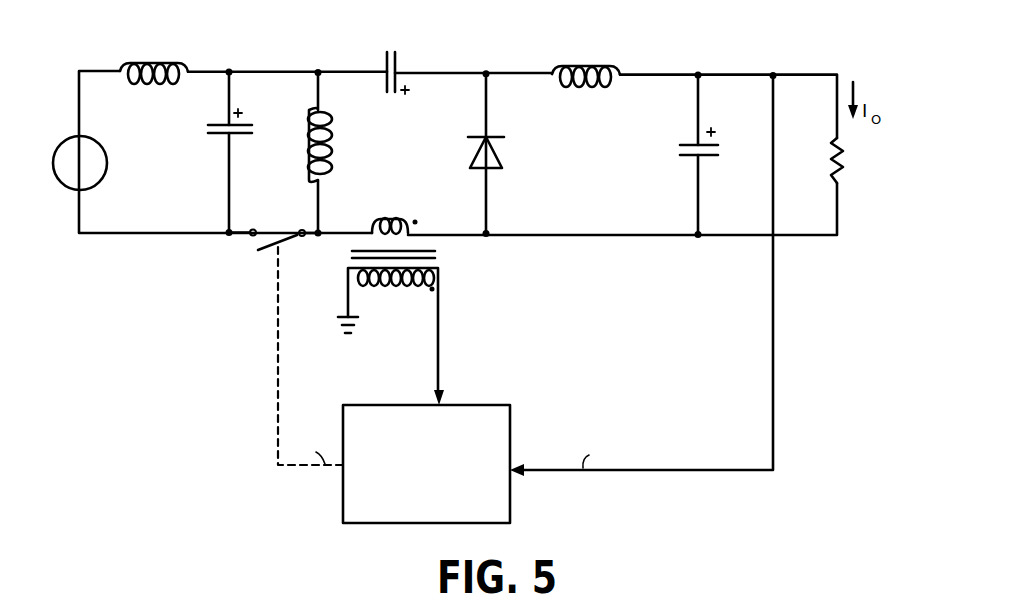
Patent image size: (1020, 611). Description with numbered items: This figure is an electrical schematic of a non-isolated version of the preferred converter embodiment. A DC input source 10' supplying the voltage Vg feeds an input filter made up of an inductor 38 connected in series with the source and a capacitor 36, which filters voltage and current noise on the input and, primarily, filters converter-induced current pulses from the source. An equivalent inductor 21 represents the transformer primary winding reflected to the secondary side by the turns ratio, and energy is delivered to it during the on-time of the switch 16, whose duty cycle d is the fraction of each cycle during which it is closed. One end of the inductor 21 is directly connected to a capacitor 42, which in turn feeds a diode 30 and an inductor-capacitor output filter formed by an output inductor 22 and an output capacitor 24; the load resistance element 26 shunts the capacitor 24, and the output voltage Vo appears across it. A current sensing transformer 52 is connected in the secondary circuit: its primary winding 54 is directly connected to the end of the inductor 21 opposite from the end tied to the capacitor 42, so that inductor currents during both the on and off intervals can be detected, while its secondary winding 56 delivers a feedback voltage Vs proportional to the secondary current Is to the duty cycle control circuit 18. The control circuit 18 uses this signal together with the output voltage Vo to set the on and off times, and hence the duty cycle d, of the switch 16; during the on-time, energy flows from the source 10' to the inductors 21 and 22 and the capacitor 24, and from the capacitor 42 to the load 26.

The source 10' is at (102, 155).
The inductor 38 is at (150, 64).
The capacitor 36 is at (208, 133).
The inductor 21 is at (328, 140).
The capacitor 42 is at (390, 97).
The diode 30 is at (503, 157).
The inductor 22 is at (583, 88).
The capacitor 24 is at (720, 155).
The load 26 is at (829, 167).
The transistor switch 16 is at (253, 245).
The primary winding 54 is at (403, 217).
The current sensing transformer 52 is at (443, 255).
The secondary winding 56 is at (388, 292).
The duty cycle control circuit 18 is at (487, 407).